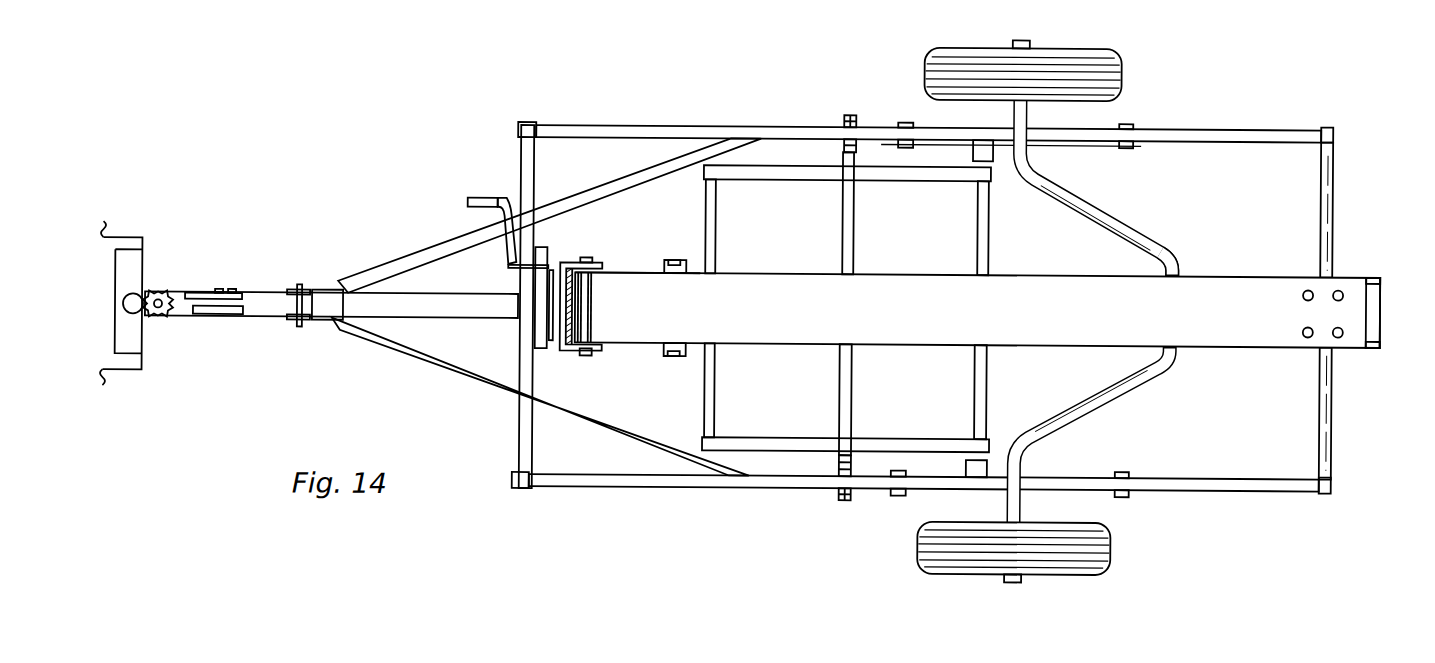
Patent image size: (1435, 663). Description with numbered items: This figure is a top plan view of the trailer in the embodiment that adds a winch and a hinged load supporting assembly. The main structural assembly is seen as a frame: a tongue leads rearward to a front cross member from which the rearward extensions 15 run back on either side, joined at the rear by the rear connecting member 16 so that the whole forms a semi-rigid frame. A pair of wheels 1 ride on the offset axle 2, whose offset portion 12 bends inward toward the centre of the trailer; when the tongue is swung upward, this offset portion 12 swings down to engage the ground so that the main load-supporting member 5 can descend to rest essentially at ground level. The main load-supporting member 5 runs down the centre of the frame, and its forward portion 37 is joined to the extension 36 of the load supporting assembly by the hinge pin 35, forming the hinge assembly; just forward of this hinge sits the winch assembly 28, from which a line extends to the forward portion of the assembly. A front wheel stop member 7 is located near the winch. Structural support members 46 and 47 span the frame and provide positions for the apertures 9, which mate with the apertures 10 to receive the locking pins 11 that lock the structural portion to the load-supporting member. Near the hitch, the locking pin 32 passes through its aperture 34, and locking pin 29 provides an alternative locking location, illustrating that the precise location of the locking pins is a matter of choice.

The wheels 1 is at (1066, 45).
The offset axle 2 is at (1078, 196).
The main load-supporting member 5 is at (1060, 318).
The front wheel stop member 7 is at (572, 352).
The apertures 9 is at (841, 147).
The apertures 10 is at (842, 112).
The locking pins 11 is at (846, 111).
The offset portion of axle 12 is at (1182, 247).
The rearward extensions 15 is at (1208, 124).
The rear connecting member 16 is at (1331, 201).
The winch assembly 28 is at (540, 248).
The locking pin 29 is at (452, 304).
The locking pin 32 is at (172, 303).
The aperture 34 is at (315, 278).
The hinge pin 35 is at (588, 256).
The extension 36 is at (603, 262).
The forward portion of main load supporting member 37 is at (606, 274).
The structural support member 46 is at (905, 180).
The structural support member 47 is at (716, 226).